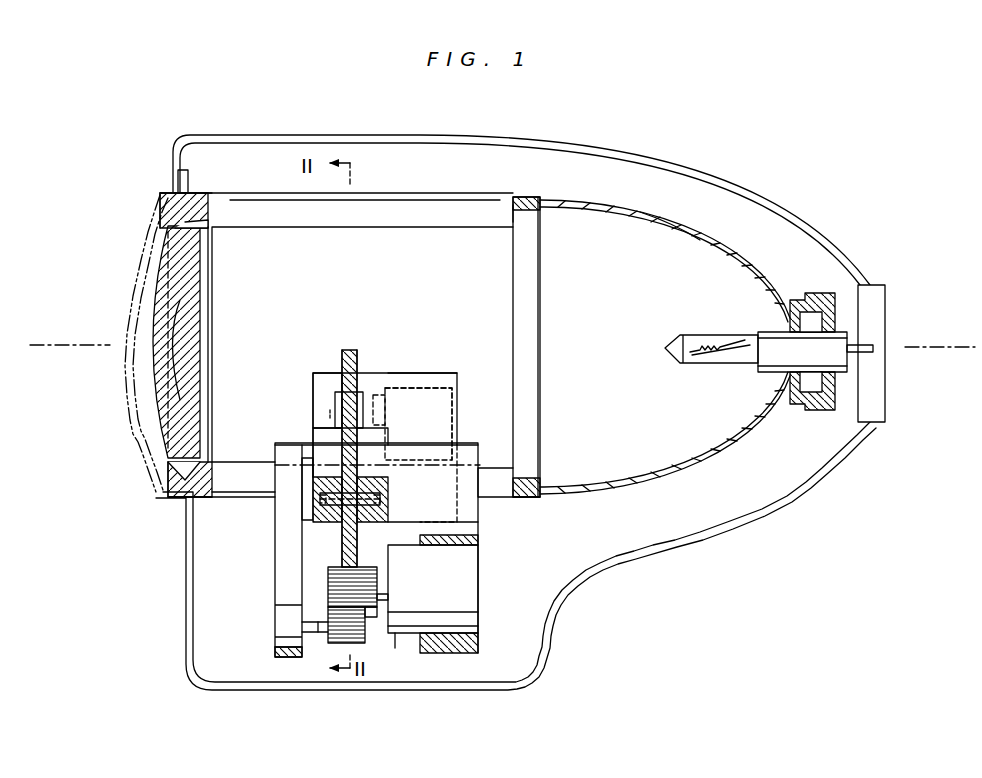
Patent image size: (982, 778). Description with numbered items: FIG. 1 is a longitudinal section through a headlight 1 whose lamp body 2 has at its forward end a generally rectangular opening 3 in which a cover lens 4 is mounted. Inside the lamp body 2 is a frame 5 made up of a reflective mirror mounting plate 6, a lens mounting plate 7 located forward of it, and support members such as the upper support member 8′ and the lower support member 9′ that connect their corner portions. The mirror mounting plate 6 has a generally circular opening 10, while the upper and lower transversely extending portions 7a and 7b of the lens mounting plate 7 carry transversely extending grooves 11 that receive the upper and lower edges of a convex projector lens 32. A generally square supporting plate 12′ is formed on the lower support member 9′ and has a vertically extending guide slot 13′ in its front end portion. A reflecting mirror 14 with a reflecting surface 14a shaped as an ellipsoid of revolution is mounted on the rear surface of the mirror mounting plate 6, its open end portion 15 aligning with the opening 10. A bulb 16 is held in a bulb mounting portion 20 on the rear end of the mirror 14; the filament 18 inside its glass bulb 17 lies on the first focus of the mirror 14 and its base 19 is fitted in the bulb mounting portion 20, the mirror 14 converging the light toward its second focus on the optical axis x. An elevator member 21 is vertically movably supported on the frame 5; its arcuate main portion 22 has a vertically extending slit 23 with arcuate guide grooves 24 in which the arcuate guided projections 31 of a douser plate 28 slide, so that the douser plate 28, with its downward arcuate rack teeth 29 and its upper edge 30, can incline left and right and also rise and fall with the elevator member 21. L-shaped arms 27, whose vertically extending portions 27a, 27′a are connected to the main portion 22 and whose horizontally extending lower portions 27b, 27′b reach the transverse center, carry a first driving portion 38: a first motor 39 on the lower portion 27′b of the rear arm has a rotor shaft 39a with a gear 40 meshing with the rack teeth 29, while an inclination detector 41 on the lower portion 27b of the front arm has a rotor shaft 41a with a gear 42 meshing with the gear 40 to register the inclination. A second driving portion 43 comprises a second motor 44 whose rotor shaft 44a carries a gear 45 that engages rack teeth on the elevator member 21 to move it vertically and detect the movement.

The headlight 1 is at (850, 146).
The lamp body 2 is at (713, 165).
The opening 3 is at (165, 198).
The cover lens 4 is at (142, 248).
The frame 5 is at (462, 197).
The reflective mirror mounting plate 6 is at (525, 198).
The lens mounting plate 7 is at (196, 194).
The upper transversely extending portion 7a is at (172, 215).
The lower transversely extending portion 7b is at (172, 482).
The support member 8′ is at (410, 207).
The lower support member 9′ is at (222, 498).
The opening 10 is at (513, 214).
The groove 11 is at (185, 237).
The supporting plate 12′ is at (420, 372).
The guide slot 13′ is at (333, 368).
The reflecting mirror 14 is at (706, 238).
The reflecting surface 14a is at (643, 236).
The open end portion 15 is at (540, 205).
The bulb 16 is at (762, 335).
The glass bulb 17 is at (700, 340).
The filament 18 is at (712, 355).
The base 19 is at (775, 367).
The bulb mounting portion 20 is at (800, 300).
The elevator member 21 is at (318, 412).
The main portion 22 is at (316, 440).
The slit 23 is at (357, 480).
The guide grooves 24 is at (300, 520).
The arm 27 is at (276, 562).
The vertically extending portion 27a is at (280, 515).
The horizontally extending portion 27b is at (283, 660).
The vertically extending portion 27′a is at (480, 455).
The horizontally extending portion 27′b is at (450, 655).
The douser plate 28 is at (342, 368).
The rack teeth 29 is at (345, 580).
The upper edge 30 is at (350, 350).
The guided projections 31 is at (320, 497).
The projector lens 32 is at (190, 300).
The first driving portion 38 is at (393, 657).
The first motor 39 is at (482, 572).
The rotor shaft 39a is at (380, 582).
The gear 40 is at (370, 612).
The inclination detector 41 is at (280, 625).
The rotor shaft 41a is at (315, 660).
The gear 42 is at (328, 680).
The second driving portion 43 is at (445, 372).
The second motor 44 is at (455, 388).
The rotor shaft 44a is at (385, 368).
The gear 45 is at (330, 412).
The optical axis x is at (493, 346).